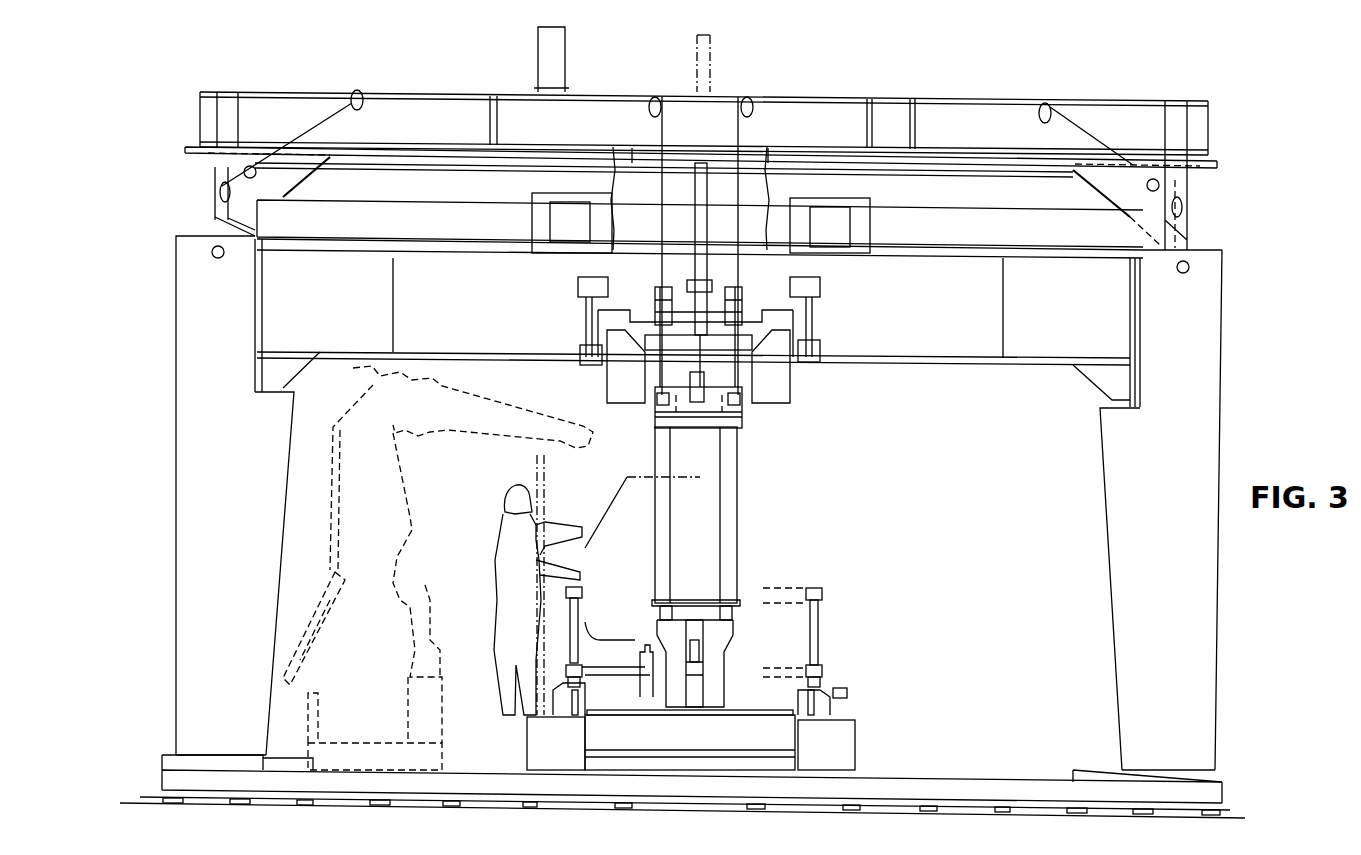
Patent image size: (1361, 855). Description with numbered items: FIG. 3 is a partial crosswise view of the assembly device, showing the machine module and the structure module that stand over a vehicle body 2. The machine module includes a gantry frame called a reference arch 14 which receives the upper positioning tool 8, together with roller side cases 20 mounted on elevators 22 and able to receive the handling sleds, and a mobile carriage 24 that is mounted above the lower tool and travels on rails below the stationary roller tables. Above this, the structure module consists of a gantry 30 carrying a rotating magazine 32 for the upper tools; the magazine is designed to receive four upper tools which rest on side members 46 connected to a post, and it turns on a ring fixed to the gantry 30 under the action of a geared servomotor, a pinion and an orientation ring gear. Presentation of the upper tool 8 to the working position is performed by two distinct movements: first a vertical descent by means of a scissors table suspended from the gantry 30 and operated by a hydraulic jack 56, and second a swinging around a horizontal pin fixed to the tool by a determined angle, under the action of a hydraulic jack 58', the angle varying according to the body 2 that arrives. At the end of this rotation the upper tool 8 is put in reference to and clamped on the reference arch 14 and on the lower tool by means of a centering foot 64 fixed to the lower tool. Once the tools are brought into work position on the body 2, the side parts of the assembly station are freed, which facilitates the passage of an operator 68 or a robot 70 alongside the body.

The body 2 is at (614, 498).
The upper positioning tool 8 is at (738, 506).
The reference arch 14 is at (1088, 382).
The roller side case 20 is at (645, 688).
The elevator 22 is at (817, 645).
The mobile carriage 24 is at (732, 740).
The gantry 30 is at (1127, 104).
The rotating magazine 32 is at (988, 236).
The side member 46 is at (541, 243).
The hydraulic jack 56 is at (710, 68).
The hydraulic jack 58' is at (692, 259).
The centering foot 64 is at (717, 640).
The operator 68 is at (512, 526).
The robot 70 is at (380, 511).